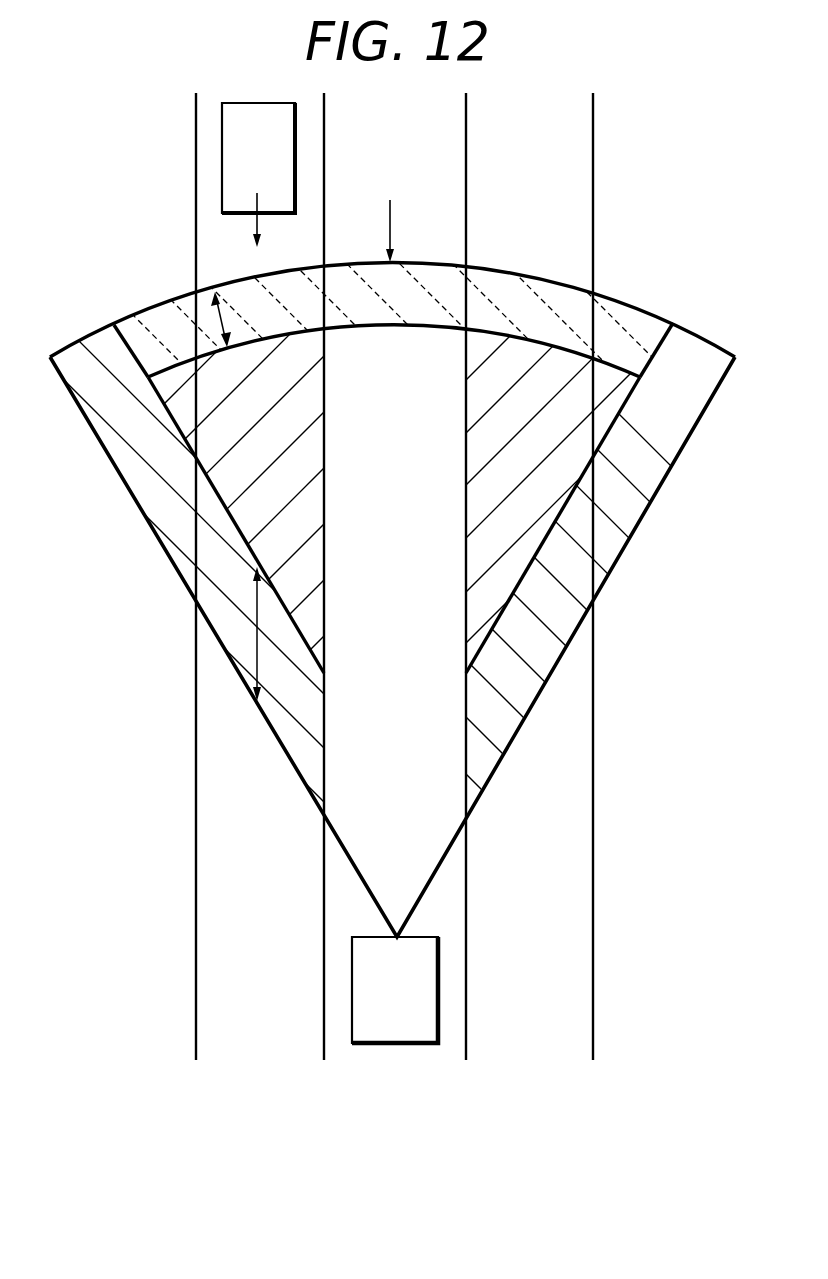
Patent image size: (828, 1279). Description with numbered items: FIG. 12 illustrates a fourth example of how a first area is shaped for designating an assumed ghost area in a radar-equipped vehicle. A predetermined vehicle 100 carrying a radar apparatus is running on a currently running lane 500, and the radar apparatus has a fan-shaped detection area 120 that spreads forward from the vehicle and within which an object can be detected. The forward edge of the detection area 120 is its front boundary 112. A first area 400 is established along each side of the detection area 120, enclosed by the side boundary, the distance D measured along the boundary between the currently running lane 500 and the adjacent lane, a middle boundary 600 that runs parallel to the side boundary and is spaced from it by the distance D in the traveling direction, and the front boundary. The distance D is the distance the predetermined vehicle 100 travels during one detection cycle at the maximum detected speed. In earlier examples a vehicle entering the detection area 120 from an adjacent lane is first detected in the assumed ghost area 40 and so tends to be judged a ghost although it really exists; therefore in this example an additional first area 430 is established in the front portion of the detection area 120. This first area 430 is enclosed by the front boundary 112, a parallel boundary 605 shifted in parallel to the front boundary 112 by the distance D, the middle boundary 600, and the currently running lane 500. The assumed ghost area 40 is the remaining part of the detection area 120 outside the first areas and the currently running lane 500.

The assumed ghost area 40 is at (483, 440).
The predetermined vehicle 100 is at (408, 1046).
The front boundary 112 is at (422, 262).
The detection area 120 is at (391, 216).
The first area 400 is at (173, 535).
The first area 430 is at (240, 292).
The currently running lane 500 is at (338, 1050).
The middle boundary 600 is at (286, 608).
The parallel boundary 605 is at (300, 328).